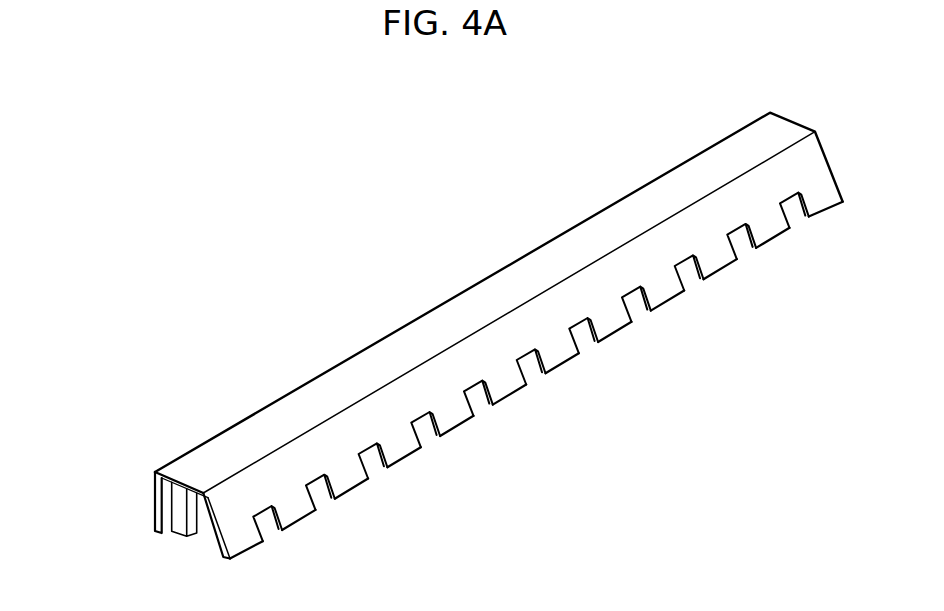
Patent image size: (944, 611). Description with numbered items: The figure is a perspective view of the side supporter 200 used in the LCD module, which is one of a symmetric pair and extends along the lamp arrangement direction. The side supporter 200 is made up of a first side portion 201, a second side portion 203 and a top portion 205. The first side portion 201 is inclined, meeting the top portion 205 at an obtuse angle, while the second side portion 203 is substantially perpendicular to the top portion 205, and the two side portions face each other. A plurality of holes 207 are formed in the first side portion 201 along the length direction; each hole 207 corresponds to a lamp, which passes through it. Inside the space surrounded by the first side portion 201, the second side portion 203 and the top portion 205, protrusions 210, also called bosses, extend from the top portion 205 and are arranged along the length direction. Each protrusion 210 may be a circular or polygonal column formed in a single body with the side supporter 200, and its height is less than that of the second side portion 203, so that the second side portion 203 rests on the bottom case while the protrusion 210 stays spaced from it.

The side supporter 200 is at (640, 165).
The first side portion 201 is at (213, 525).
The second side portion 203 is at (155, 502).
The top portion 205 is at (228, 447).
The hole 207 is at (375, 470).
The protrusion 210 is at (178, 523).